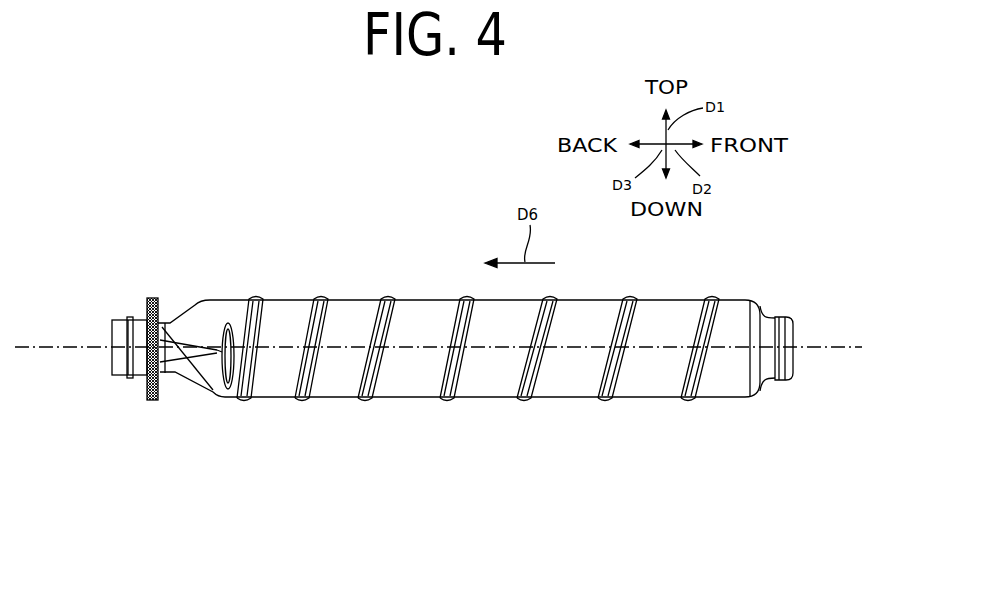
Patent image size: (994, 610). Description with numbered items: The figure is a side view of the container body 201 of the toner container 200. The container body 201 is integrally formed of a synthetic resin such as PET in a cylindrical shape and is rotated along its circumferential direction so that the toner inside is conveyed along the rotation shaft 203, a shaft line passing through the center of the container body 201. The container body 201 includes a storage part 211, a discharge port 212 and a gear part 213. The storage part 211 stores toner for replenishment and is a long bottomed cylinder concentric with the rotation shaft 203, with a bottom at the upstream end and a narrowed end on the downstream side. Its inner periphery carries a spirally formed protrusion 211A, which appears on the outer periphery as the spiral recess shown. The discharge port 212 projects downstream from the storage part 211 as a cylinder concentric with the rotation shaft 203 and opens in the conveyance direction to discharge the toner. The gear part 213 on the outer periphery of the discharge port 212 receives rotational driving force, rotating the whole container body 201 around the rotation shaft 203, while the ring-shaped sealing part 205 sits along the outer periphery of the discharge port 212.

The toner container 200 is at (170, 160).
The container body 201 is at (315, 215).
The rotation shaft 203 is at (833, 345).
The sealing part 205 is at (124, 318).
The storage part 211 is at (398, 411).
The protrusion 211A is at (518, 398).
The discharge port 212 is at (128, 399).
The gear part 213 is at (150, 292).